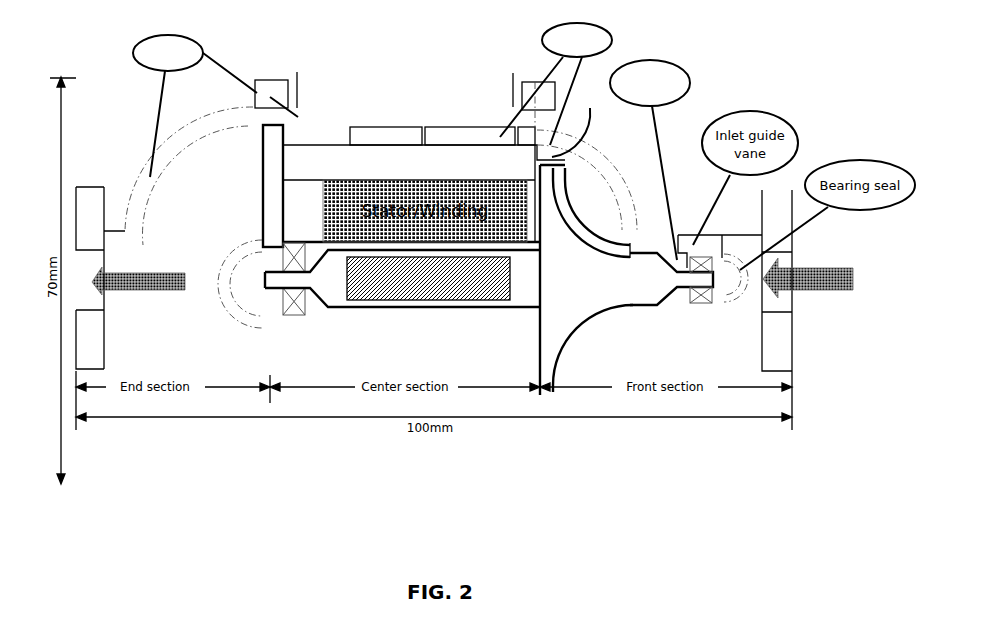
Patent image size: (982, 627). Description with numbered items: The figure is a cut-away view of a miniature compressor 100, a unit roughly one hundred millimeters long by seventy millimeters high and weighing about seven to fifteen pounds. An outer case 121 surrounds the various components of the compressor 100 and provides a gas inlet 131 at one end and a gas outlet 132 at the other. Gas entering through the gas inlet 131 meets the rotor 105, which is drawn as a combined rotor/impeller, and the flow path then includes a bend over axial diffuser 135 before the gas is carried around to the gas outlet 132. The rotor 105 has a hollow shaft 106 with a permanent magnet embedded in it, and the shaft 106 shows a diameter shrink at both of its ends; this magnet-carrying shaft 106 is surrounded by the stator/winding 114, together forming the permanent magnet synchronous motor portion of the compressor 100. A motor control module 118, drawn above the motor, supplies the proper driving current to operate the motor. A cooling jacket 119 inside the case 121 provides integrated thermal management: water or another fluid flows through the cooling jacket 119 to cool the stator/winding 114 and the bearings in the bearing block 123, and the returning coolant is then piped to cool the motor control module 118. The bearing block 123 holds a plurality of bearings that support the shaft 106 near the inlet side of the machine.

The miniature compressor 100 is at (228, 456).
The rotor 105 is at (587, 323).
The shaft 106 is at (453, 303).
The stator/winding 114 is at (288, 205).
The motor control module 118 is at (475, 77).
The cooling jacket 119 is at (330, 157).
The outer case 121 is at (138, 190).
The bearing block 123 is at (700, 314).
The gas inlet 131 is at (790, 303).
The gas outlet 132 is at (87, 303).
The bend over axial diffuser 135 is at (556, 90).